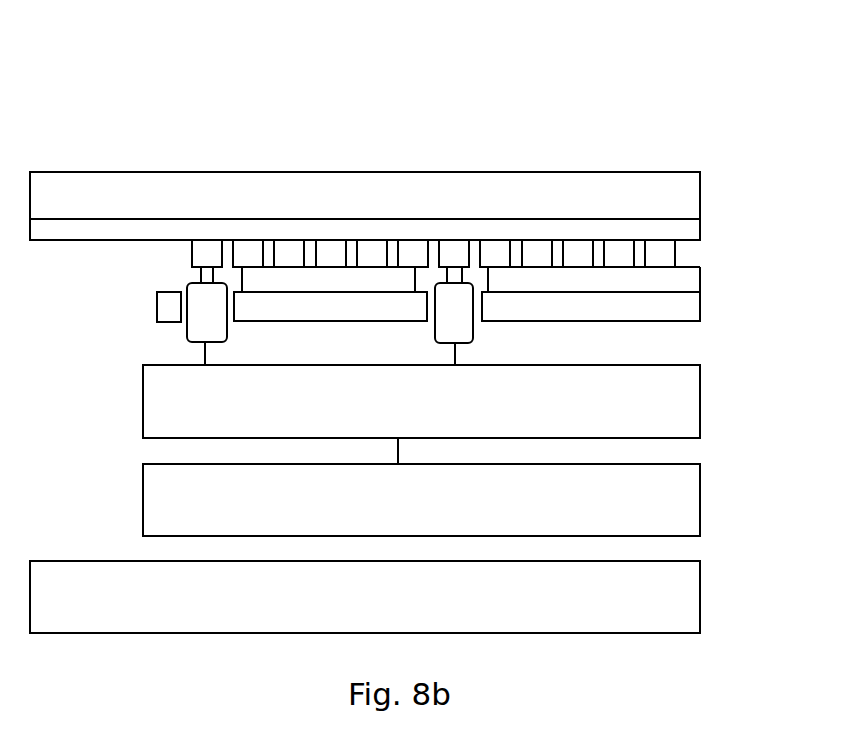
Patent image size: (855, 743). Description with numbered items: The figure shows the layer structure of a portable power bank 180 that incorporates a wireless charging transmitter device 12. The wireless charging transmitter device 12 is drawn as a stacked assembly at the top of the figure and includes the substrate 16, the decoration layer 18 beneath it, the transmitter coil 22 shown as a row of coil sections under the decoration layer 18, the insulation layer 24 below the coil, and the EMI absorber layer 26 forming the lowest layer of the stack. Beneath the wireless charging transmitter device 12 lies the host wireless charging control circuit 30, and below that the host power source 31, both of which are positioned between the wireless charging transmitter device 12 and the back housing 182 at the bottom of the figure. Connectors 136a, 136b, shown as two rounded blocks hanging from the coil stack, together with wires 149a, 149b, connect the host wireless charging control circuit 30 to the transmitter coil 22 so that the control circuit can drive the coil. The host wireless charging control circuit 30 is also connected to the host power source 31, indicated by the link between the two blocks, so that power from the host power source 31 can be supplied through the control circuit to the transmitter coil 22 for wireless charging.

The wireless charging transmitter device 12 is at (413, 177).
The substrate 16 is at (393, 191).
The decoration layer 18 is at (200, 228).
The transmitter coil 22 is at (675, 255).
The insulation layer 24 is at (290, 280).
The EMI absorber layer 26 is at (330, 307).
The host wireless charging control circuit 30 is at (684, 394).
The host power source 31 is at (684, 493).
The connector 136a is at (205, 320).
The connector 136b is at (463, 328).
The wire 149a is at (208, 356).
The wire 149b is at (452, 354).
The portable power bank 180 is at (380, 113).
The back housing 182 is at (684, 588).